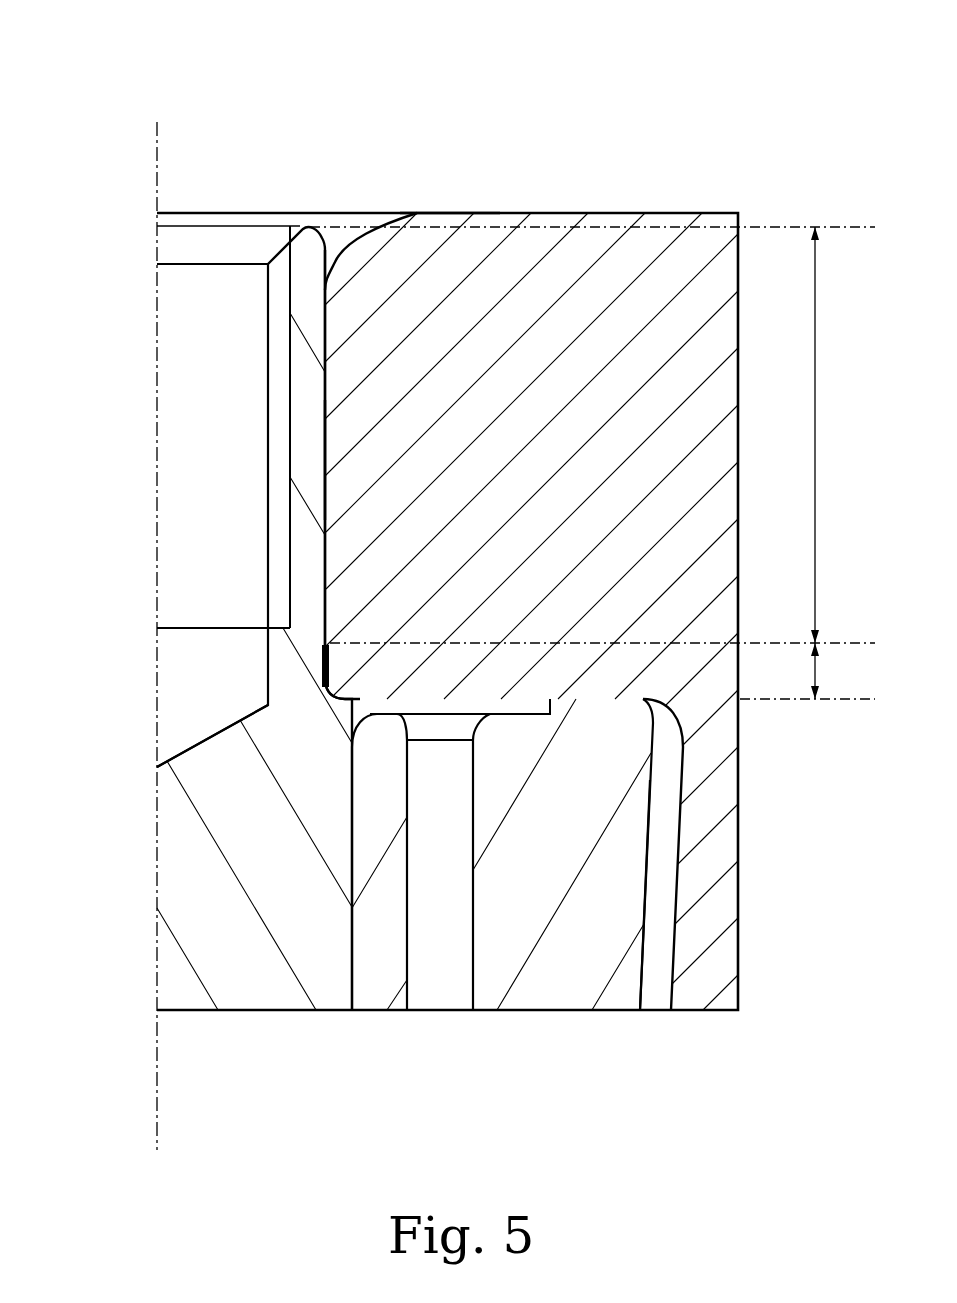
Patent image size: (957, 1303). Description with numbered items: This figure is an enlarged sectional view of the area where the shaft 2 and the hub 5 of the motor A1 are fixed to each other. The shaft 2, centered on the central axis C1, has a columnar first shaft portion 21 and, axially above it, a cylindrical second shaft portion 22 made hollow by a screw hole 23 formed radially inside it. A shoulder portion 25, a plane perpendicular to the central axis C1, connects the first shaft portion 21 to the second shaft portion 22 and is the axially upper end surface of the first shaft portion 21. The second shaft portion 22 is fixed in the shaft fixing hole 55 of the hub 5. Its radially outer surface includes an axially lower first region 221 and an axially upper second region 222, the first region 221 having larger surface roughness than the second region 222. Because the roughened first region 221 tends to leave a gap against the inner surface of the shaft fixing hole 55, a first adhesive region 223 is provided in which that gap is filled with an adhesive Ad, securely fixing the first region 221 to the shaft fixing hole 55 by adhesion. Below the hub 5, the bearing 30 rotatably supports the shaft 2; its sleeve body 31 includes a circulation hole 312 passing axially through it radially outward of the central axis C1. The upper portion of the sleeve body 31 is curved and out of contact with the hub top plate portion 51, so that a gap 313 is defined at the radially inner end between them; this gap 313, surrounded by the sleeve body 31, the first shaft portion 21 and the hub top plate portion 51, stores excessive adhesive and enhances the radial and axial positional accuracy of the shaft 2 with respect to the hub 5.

The shaft 2 is at (153, 940).
The first shaft portion 21 is at (196, 870).
The second shaft portion 22 is at (302, 272).
The screw hole 23 is at (183, 307).
The shoulder portion 25 is at (336, 684).
The shaft fixing hole 55 is at (322, 458).
The first adhesive region 223 is at (320, 652).
The adhesive Ad is at (320, 671).
The hub 5 is at (660, 213).
The hub top plate portion 51 is at (448, 213).
The bearing 30 is at (608, 995).
The sleeve body 31 is at (542, 993).
The circulation hole 312 is at (442, 985).
The gap 313 is at (385, 707).
The first region 221 is at (807, 671).
The second region 222 is at (592, 435).
The central axis C1 is at (158, 133).
The motor A1 is at (695, 110).